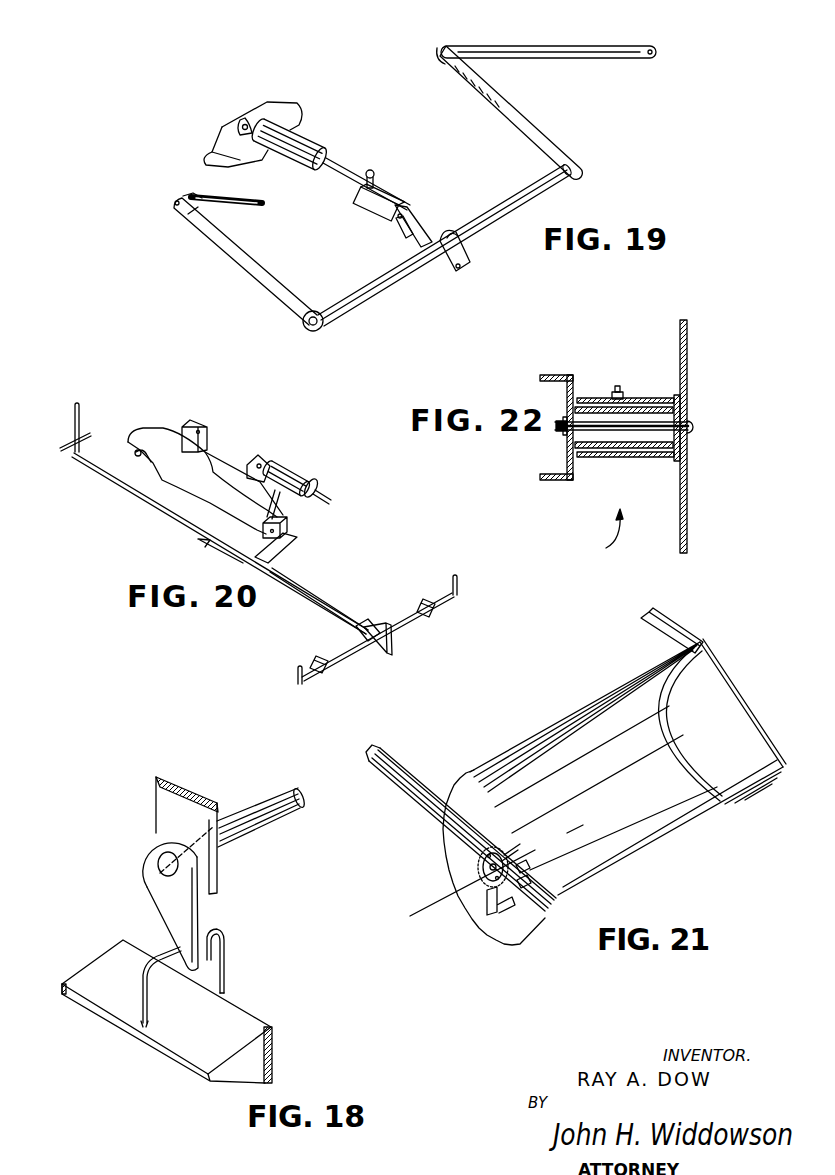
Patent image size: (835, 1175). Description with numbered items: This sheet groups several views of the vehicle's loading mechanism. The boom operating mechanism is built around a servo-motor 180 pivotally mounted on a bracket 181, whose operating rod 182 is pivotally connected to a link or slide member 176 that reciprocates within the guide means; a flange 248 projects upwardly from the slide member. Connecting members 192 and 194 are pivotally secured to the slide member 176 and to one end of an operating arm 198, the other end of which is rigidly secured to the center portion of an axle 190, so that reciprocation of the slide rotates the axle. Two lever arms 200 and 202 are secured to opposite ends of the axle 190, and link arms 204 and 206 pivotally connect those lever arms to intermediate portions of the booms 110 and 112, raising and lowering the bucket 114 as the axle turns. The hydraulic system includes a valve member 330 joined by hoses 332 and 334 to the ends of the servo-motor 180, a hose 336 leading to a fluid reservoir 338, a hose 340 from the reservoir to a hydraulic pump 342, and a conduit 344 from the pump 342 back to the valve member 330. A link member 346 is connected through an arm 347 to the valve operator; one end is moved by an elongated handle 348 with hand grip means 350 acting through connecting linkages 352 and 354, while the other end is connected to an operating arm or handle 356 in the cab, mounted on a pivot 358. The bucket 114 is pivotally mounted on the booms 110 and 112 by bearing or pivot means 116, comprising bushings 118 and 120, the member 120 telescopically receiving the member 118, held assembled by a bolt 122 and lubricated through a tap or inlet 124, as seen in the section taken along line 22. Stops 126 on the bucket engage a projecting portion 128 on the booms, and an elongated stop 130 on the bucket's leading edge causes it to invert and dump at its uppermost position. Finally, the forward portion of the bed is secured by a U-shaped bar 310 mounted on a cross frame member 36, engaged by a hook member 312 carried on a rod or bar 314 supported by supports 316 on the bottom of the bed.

In FIG. 19, the link or slide member 176 is at (377, 210).
In FIG. 19, the servo-motor 180 is at (298, 141).
In FIG. 20, the servo-motor 180 is at (297, 465).
In FIG. 19, the bracket 181 is at (227, 145).
In FIG. 19, the operating rod 182 is at (347, 180).
In FIG. 20, the operating rod 182 is at (332, 499).
In FIG. 19, the axle 190 is at (373, 293).
In FIG. 19, the connecting member 192 is at (405, 234).
In FIG. 19, the connecting member 194 is at (422, 214).
In FIG. 19, the operating arm 198 is at (463, 255).
In FIG. 19, the lever arm 200 is at (273, 283).
In FIG. 19, the lever arm 202 is at (507, 120).
In FIG. 19, the link arm 204 is at (236, 205).
In FIG. 19, the link arm 206 is at (565, 52).
In FIG. 19, the flange 248 is at (373, 172).
In FIG. 20, the valve member 330 is at (288, 525).
In FIG. 20, the hose 332 is at (280, 458).
In FIG. 20, the hose 334 is at (316, 480).
In FIG. 20, the hose 336 is at (214, 458).
In FIG. 20, the fluid reservoir 338 is at (190, 421).
In FIG. 20, the hose 340 is at (143, 426).
In FIG. 20, the hydraulic pump 342 is at (147, 455).
In FIG. 20, the conduit 344 is at (193, 524).
In FIG. 20, the link member 346 is at (318, 594).
In FIG. 20, the arm 347 is at (283, 560).
In FIG. 20, the elongated handle 348 is at (342, 667).
In FIG. 20, the hand grip means 350 is at (457, 585).
In FIG. 20, the connecting linkage 352 is at (380, 655).
In FIG. 20, the connecting linkage 354 is at (392, 637).
In FIG. 20, the operating arm or handle 356 is at (78, 410).
In FIG. 20, the pivot 358 is at (88, 434).
In FIG. 22, the boom 110 is at (567, 375).
In FIG. 21, the boom 110 is at (378, 758).
In FIG. 21, the boom 112 is at (657, 640).
In FIG. 22, the bucket 114 is at (684, 352).
In FIG. 21, the bucket 114 is at (538, 734).
In FIG. 22, the bearing or pivot means 116 is at (595, 535).
In FIG. 21, the bearing or pivot means 116 is at (480, 864).
In FIG. 22, the cylindrical member or bushing 118 is at (570, 434).
In FIG. 22, the cylindrical member or bushing 120 is at (611, 460).
In FIG. 22, the bolt 122 is at (690, 432).
In FIG. 22, the tap or inlet 124 is at (608, 387).
In FIG. 21, the stop 126 is at (530, 882).
In FIG. 21, the projecting portion 128 is at (494, 908).
In FIG. 21, the elongated stop 130 is at (470, 783).
In FIG. 21, the section line 22— 22 is at (418, 910).
In FIG. 18, the cross frame member 36 is at (118, 963).
In FIG. 18, the U-shaped bar 310 is at (227, 958).
In FIG. 18, the hook member 312 is at (188, 895).
In FIG. 18, the rod or bar 314 is at (248, 828).
In FIG. 18, the support 316 is at (175, 775).